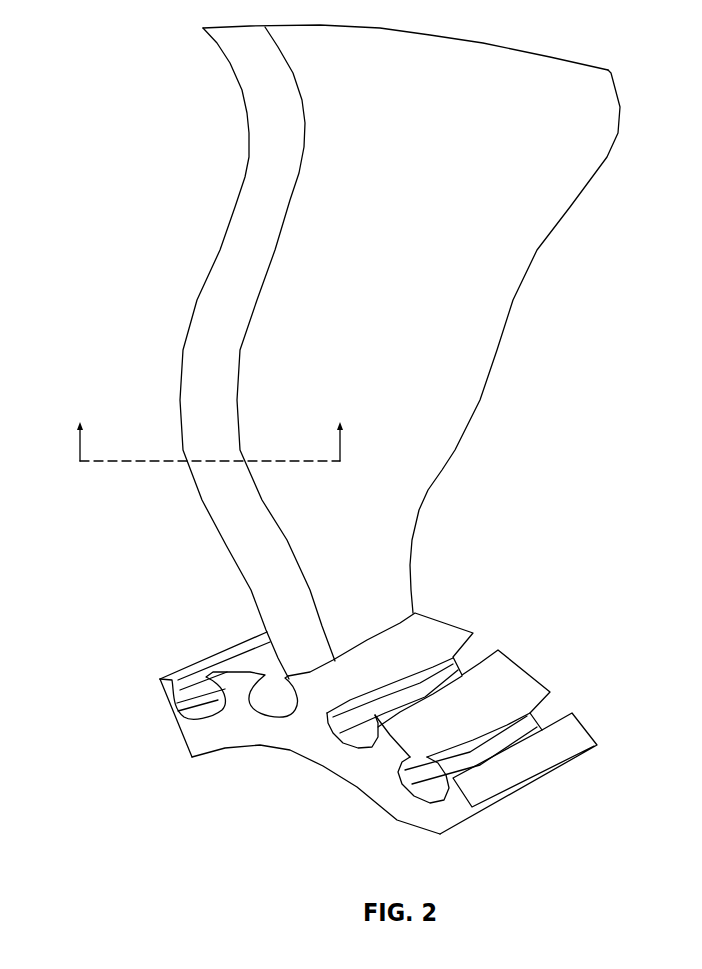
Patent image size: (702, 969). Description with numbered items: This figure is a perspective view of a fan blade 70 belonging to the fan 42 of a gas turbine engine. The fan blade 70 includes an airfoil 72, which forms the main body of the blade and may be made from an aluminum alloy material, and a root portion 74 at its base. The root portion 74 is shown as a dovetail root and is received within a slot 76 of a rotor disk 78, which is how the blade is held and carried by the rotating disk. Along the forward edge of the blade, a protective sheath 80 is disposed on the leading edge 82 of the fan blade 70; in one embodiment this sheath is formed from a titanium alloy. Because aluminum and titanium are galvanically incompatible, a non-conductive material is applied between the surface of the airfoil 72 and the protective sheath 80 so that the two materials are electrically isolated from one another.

The fan 42 is at (112, 158).
The fan blade 70 is at (551, 212).
The airfoil 72 is at (258, 418).
The root portion 74 is at (273, 718).
The slot 76 is at (541, 730).
The rotor disk 78 is at (378, 807).
The protective sheath 80 is at (192, 320).
The leading edge 82 is at (189, 504).